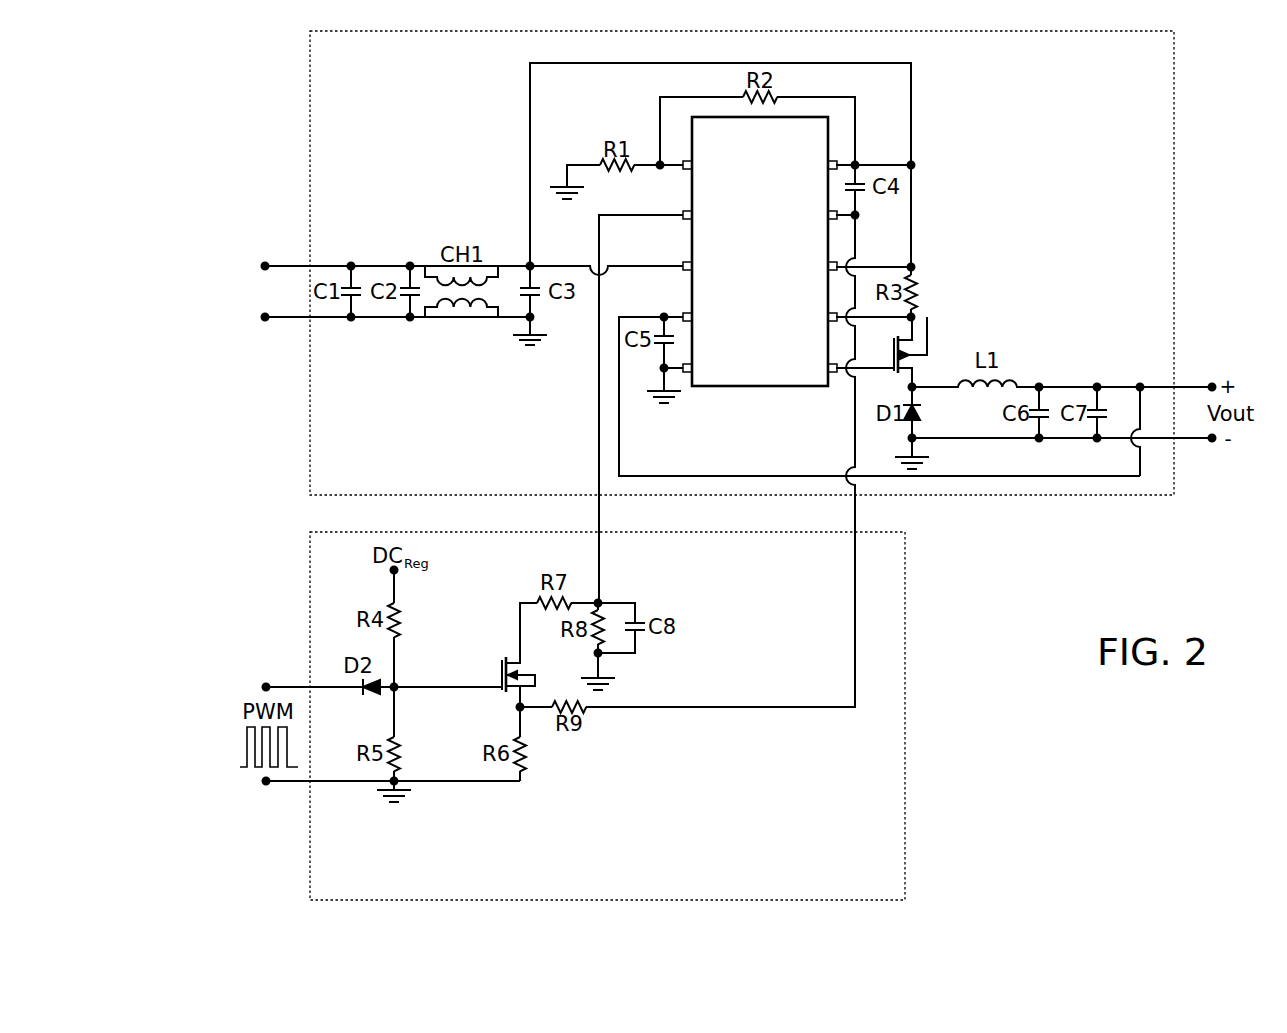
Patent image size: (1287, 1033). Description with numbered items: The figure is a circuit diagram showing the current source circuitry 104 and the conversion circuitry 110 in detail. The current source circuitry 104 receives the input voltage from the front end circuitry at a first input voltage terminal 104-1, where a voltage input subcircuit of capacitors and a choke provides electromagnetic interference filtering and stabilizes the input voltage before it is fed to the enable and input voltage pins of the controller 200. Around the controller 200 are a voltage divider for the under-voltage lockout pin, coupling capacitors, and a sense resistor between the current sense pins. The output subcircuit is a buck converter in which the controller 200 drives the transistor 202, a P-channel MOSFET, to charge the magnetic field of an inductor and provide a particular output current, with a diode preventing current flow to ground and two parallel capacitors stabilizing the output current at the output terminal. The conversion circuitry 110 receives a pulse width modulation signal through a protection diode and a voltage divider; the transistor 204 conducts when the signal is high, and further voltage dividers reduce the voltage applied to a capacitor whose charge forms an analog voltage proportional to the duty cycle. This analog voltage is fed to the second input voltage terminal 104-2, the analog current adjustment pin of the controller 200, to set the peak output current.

The current source circuitry 104 is at (742, 263).
The first input voltage terminal 104-1 is at (222, 262).
The second input voltage terminal 104-2 is at (683, 221).
The conversion circuitry 110 is at (607, 701).
The controller 200 is at (760, 251).
The transistor 202 is at (934, 343).
The transistor 204 is at (497, 668).